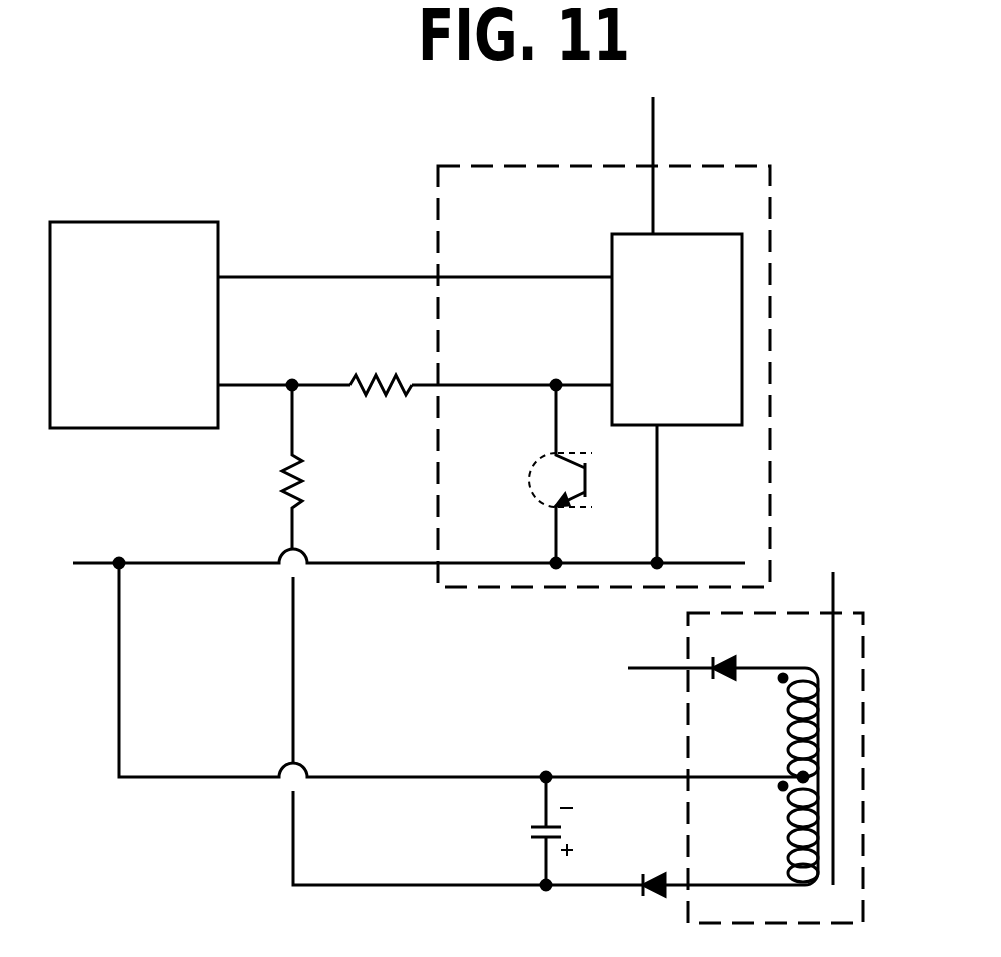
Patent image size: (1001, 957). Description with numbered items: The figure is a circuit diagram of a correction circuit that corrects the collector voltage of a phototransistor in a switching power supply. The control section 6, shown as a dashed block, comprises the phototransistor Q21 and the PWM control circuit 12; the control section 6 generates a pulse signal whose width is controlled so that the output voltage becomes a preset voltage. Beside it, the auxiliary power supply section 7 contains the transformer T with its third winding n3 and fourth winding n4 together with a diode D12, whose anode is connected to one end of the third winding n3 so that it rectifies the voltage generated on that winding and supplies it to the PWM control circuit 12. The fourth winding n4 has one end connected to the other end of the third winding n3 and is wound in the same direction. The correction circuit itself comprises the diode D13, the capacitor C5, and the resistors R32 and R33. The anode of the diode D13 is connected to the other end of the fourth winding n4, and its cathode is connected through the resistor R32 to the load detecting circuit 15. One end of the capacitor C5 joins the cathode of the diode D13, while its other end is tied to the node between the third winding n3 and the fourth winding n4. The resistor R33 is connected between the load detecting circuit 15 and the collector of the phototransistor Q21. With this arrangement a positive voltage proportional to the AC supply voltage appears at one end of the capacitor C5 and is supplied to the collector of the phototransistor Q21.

The control section 6 is at (707, 166).
The auxiliary power supply section 7 is at (802, 747).
The PWM control circuit 12 is at (667, 234).
The load detecting circuit 15 is at (158, 222).
The resistor R32 is at (321, 467).
The resistor R33 is at (381, 369).
The phototransistor Q21 is at (530, 474).
The capacitor C5 is at (574, 831).
The diode D12 is at (722, 653).
The diode D13 is at (651, 870).
The third winding n3 is at (796, 705).
The fourth winding n4 is at (796, 850).
The transformer T is at (836, 902).